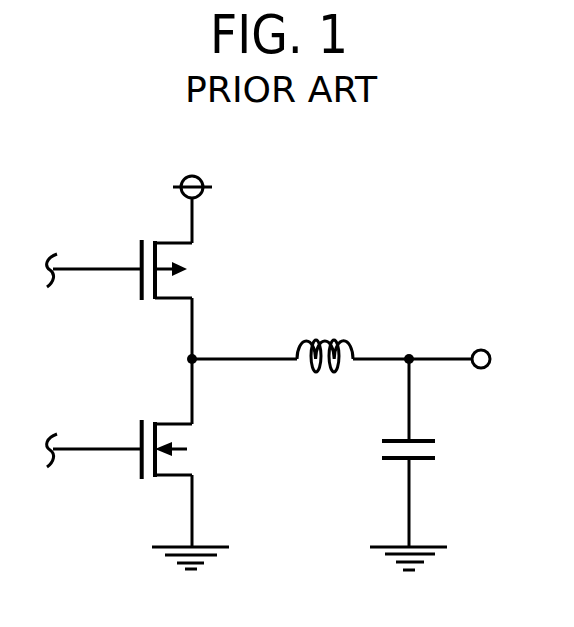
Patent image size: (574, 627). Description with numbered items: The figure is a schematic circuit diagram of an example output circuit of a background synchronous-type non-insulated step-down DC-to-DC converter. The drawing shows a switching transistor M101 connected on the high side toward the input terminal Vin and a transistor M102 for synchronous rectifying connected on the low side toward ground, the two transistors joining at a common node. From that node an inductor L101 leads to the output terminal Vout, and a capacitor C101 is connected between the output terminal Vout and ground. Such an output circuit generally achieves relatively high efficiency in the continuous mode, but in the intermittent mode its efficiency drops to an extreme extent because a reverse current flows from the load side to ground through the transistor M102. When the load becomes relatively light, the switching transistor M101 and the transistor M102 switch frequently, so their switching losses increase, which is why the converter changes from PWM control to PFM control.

The switching transistor M101 is at (119, 256).
The transistor for synchronous rectifying M102 is at (119, 436).
The inductor L101 is at (327, 337).
The output capacitor C101 is at (373, 451).
The input voltage terminal Vin is at (192, 193).
The output voltage terminal Vout is at (479, 343).